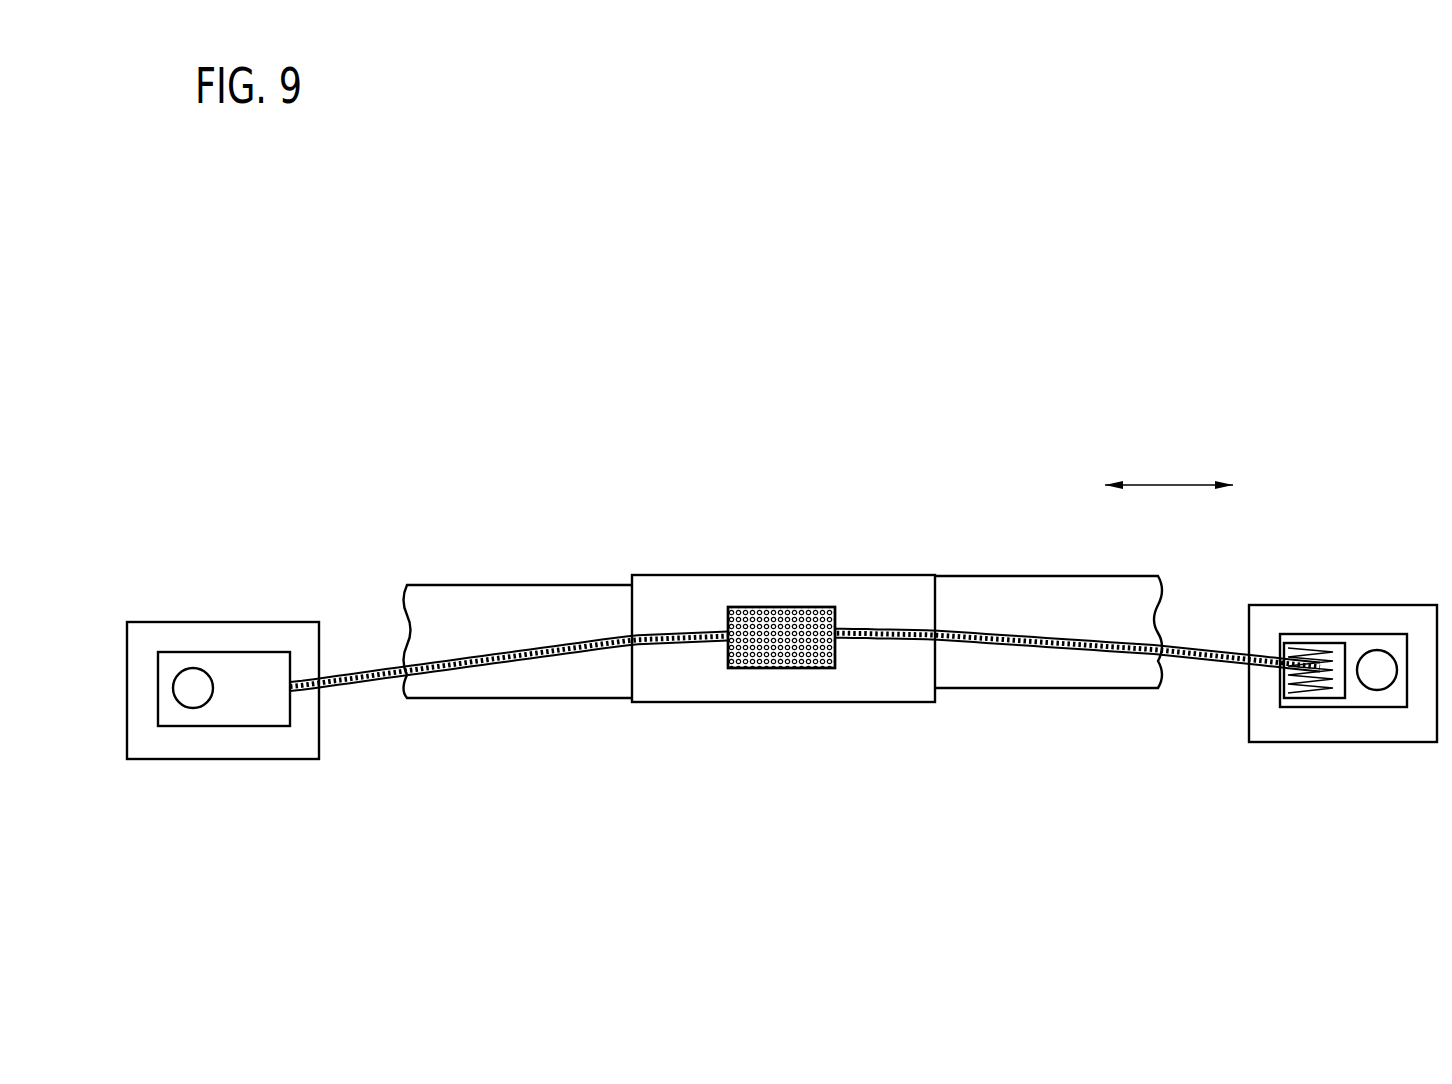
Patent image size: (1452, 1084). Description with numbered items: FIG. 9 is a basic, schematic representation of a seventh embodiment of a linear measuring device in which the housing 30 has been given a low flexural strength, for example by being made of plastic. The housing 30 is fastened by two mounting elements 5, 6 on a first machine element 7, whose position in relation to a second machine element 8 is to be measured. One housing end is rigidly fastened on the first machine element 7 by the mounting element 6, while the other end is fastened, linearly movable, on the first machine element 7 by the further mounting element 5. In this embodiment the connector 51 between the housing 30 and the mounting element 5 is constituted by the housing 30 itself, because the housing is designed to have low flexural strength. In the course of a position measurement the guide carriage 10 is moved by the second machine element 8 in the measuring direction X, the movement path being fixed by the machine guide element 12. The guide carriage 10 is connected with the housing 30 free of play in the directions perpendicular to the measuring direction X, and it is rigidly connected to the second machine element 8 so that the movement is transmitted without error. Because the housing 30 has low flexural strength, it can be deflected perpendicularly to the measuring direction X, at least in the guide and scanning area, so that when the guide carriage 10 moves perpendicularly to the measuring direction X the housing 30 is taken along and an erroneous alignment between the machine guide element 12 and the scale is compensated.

The mounting element 5 is at (1352, 648).
The mounting element 6 is at (232, 680).
The first machine element 7 is at (250, 740).
The second machine element 8 is at (902, 683).
The guide carriage 10 is at (773, 635).
The machine guide element 12 is at (485, 607).
The housing 30 is at (990, 632).
The connector 51 is at (1295, 700).
The measuring direction X is at (1169, 450).